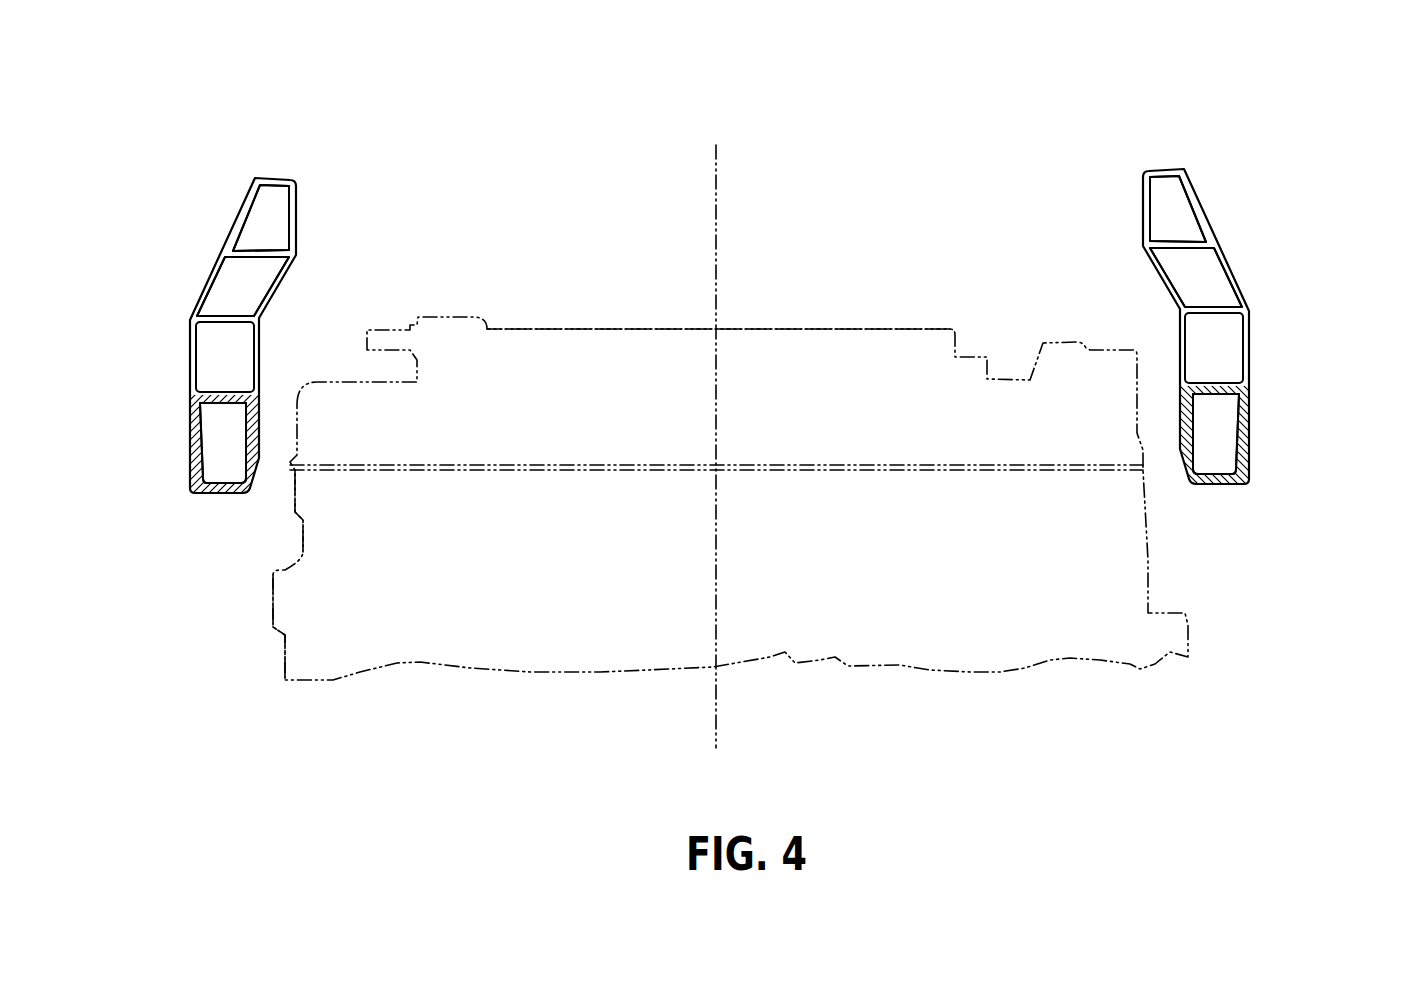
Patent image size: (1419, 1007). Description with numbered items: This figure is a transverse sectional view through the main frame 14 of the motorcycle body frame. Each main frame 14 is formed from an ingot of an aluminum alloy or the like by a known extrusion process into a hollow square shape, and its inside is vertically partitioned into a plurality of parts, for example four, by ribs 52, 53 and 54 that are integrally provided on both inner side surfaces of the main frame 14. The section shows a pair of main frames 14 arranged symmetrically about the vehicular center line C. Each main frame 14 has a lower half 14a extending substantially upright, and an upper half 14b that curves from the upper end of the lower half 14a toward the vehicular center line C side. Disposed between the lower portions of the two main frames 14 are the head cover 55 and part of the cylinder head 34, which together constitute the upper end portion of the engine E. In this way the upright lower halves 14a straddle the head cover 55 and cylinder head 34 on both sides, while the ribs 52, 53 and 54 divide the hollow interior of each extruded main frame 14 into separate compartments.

The main frame 14 is at (452, 148).
The lower half 14a is at (258, 380).
The upper half 14b is at (277, 290).
The rib 52 is at (250, 250).
The rib 53 is at (232, 317).
The rib 54 is at (223, 400).
The head cover 55 is at (568, 329).
The cylinder head 34 is at (337, 512).
The vehicular center line C is at (717, 243).
The engine E is at (260, 609).